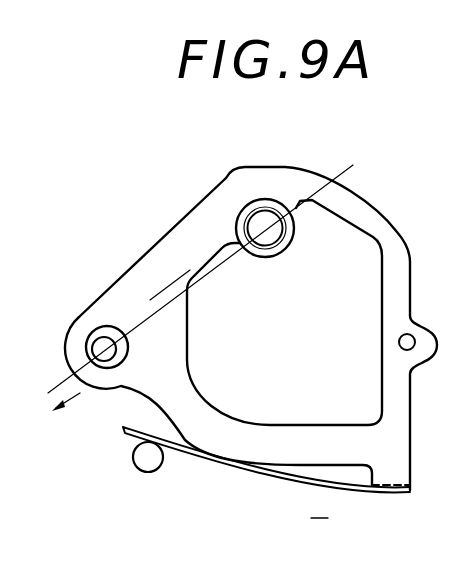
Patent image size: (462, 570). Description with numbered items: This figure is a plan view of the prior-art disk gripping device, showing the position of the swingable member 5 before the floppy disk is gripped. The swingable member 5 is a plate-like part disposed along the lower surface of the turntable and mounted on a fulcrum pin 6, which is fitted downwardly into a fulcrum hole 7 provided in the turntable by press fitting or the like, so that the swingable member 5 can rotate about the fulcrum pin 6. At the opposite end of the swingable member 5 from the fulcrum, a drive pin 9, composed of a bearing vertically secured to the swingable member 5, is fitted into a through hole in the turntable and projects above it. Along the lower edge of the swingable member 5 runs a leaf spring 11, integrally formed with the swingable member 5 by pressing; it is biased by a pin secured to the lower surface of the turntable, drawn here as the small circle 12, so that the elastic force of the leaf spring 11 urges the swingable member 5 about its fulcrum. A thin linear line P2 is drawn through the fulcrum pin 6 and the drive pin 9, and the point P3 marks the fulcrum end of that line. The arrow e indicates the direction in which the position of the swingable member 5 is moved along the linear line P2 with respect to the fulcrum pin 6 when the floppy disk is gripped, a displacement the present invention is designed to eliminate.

The swingable member 5 is at (200, 203).
The fulcrum pin 6 is at (111, 362).
The fulcrum hole 7 is at (110, 326).
The drive pin 9 is at (264, 220).
The leaf spring 11 is at (204, 460).
The roller 12 is at (147, 472).
The linear line P2 is at (171, 299).
The pivot point P3 is at (70, 356).
The arrow e is at (77, 402).